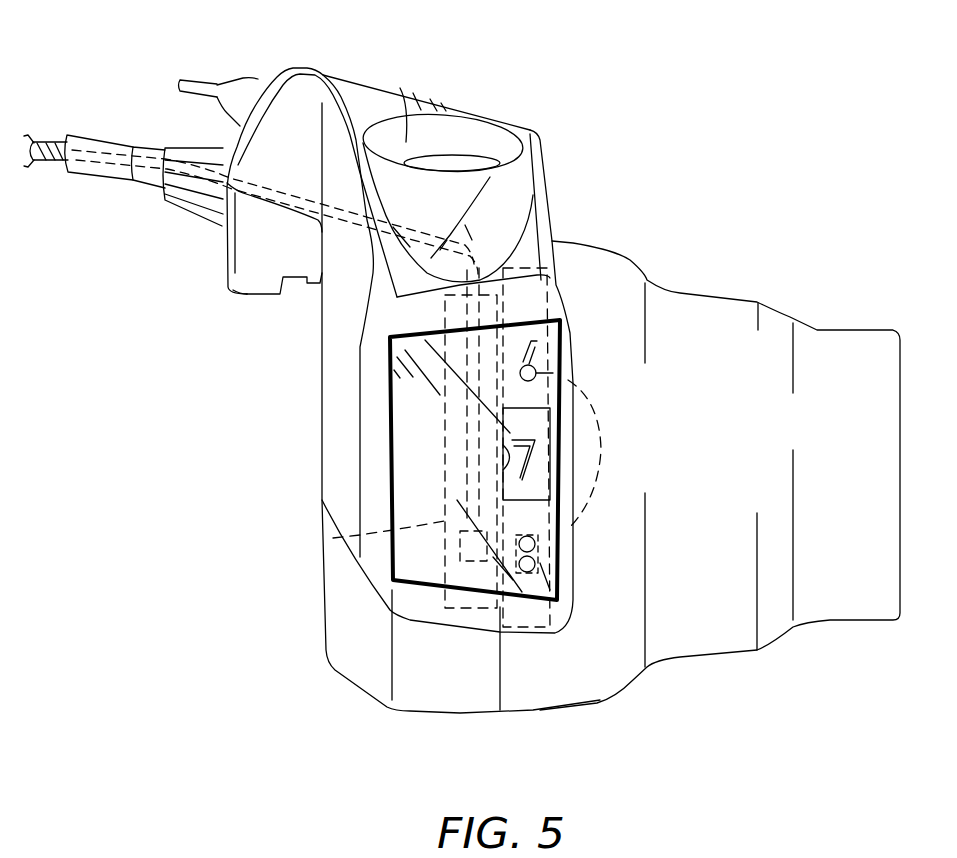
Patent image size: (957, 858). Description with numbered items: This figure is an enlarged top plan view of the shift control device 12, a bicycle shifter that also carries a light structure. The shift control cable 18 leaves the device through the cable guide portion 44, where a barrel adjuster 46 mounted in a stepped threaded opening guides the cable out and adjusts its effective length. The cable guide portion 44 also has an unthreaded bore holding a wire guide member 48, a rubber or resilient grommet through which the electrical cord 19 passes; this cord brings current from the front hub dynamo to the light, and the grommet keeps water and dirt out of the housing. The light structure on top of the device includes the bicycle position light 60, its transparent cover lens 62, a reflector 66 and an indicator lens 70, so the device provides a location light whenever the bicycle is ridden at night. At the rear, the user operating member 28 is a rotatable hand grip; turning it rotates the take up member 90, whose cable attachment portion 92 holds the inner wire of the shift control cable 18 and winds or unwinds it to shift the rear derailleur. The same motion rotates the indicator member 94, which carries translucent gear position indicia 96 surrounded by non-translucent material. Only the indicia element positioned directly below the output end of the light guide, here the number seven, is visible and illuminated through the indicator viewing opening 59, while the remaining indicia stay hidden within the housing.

The shift control device 12 is at (693, 165).
The shift control cable 18 is at (99, 175).
The electrical cord 19 is at (197, 74).
The user operating member 28 is at (774, 296).
The cable guide portion 44 is at (251, 298).
The barrel adjuster 46 is at (181, 216).
The wire guide member 48 is at (243, 78).
The indicator viewing opening 59 is at (540, 457).
The bicycle position light 60 is at (431, 67).
The transparent cover lens 62 is at (375, 100).
The reflector 66 is at (468, 140).
The indicator lens 70 is at (440, 558).
The take up member 90 is at (467, 609).
The cable attachment portion 92 is at (333, 538).
The indicator member 94 is at (527, 627).
The gear position indicia 96 is at (593, 455).